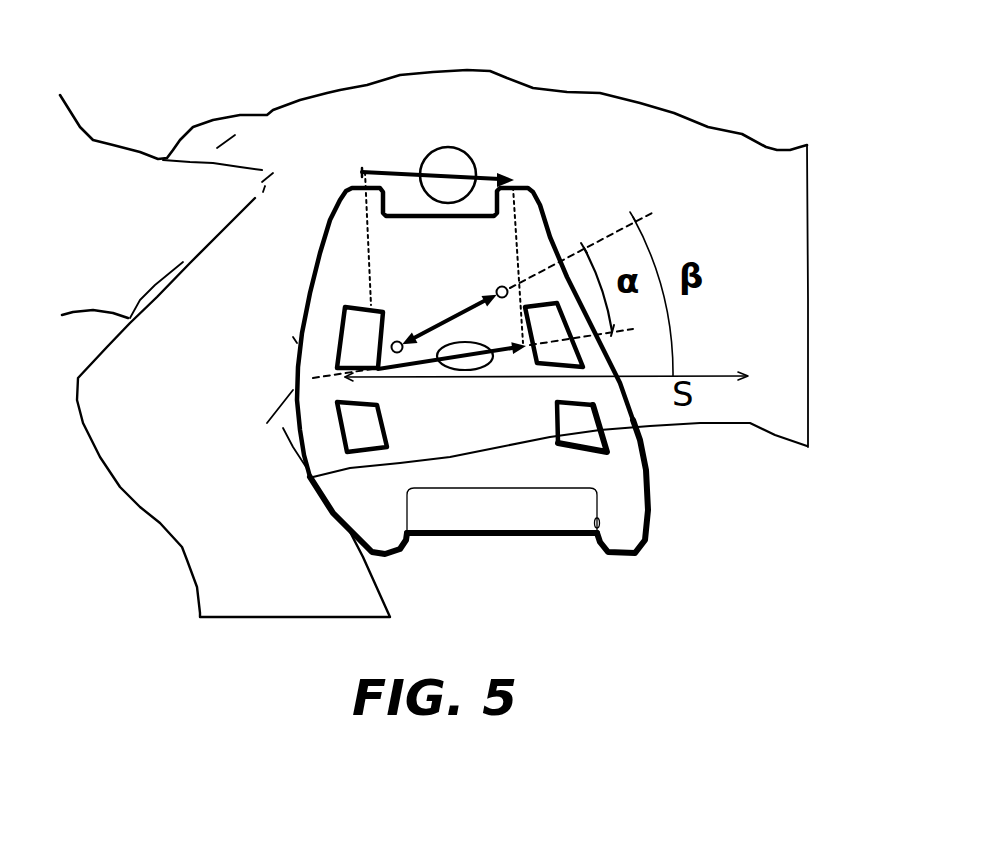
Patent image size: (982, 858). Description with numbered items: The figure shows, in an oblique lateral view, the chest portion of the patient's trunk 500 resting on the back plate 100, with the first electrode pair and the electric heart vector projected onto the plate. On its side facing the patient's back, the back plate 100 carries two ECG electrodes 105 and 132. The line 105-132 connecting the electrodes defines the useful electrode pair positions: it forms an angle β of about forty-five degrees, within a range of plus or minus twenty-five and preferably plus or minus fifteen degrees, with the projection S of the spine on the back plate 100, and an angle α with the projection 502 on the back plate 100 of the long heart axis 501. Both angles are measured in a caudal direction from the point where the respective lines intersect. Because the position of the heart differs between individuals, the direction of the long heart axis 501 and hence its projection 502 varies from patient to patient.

The back plate 100 is at (539, 363).
The ECG electrode 105 is at (436, 489).
The ECG electrode 132 is at (620, 182).
The line connecting the electrodes 105-132 is at (341, 190).
The trunk 500 is at (434, 332).
The long heart axis 501 is at (466, 117).
The projection of the long heart axis 502 is at (473, 482).